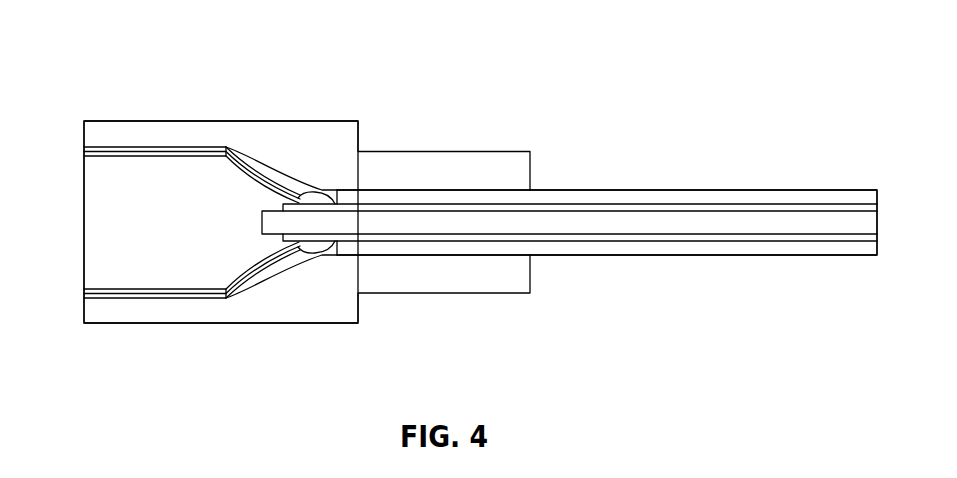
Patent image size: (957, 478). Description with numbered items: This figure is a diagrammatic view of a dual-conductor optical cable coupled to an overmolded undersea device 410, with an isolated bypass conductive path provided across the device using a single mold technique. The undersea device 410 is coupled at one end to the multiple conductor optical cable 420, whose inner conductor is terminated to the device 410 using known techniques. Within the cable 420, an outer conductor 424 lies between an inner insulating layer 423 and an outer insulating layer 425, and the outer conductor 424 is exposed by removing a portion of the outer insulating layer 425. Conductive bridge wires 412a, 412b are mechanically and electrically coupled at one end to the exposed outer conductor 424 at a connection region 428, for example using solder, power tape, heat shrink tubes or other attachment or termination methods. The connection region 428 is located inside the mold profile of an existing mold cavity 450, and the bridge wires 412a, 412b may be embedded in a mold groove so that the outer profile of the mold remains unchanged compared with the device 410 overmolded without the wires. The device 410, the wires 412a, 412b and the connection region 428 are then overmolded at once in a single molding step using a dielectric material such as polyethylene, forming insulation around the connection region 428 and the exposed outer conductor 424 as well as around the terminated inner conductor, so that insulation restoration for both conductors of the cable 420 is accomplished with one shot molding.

The undersea device 410 is at (147, 208).
The mold cavity 450 is at (182, 121).
The conductive bridge wire 412a is at (235, 147).
The conductive bridge wire 412b is at (207, 299).
The connection region 428 is at (322, 185).
The outer conductor 424 is at (390, 207).
The outer insulating layer 425 is at (565, 190).
The inner insulating layer 423 is at (262, 223).
The multiple conductor optical cable 420 is at (753, 174).